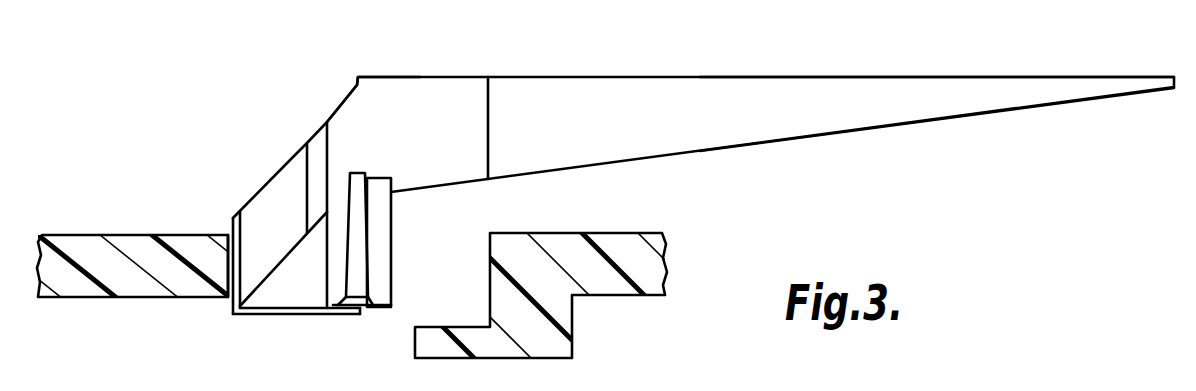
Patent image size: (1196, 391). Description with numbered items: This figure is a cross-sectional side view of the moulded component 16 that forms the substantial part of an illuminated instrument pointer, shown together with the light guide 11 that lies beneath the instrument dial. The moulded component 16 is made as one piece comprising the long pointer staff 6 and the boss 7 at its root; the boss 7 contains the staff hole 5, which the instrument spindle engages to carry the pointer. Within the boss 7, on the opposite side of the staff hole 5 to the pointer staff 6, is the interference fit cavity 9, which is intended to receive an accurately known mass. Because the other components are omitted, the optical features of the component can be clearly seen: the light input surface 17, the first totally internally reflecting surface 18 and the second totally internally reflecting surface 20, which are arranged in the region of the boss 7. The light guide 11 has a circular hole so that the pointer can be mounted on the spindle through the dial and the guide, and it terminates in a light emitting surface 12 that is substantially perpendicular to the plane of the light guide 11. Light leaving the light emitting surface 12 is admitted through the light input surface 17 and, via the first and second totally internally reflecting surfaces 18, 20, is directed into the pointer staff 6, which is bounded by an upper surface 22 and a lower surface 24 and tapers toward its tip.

The staff hole 5 is at (388, 275).
The pointer staff 6 is at (806, 92).
The boss 7 is at (338, 108).
The interference fit cavity 9 is at (270, 207).
The light guide 11 is at (91, 246).
The light emitting surface 12 is at (222, 253).
The moulded component 16 is at (680, 68).
The light input surface 17 is at (233, 306).
The first totally internally reflecting surface 18 is at (276, 273).
The second totally internally reflecting surface 20 is at (278, 170).
The upper surface 22 is at (921, 76).
The lower surface 24 is at (842, 133).